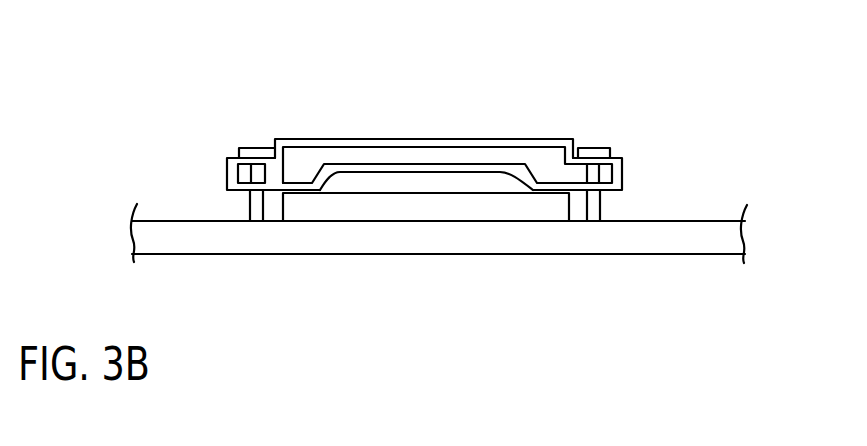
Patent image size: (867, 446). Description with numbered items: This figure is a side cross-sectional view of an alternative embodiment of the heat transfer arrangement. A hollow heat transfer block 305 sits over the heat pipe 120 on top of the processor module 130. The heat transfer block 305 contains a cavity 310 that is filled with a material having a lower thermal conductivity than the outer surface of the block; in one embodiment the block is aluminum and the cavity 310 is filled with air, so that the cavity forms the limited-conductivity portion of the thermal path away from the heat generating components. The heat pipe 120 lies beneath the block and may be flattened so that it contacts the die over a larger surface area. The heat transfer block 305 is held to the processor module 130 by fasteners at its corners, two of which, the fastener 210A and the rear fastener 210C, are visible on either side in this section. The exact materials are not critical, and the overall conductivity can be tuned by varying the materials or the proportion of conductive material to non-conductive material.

The cavity 310 is at (542, 152).
The hollow heat transfer block 305 is at (623, 173).
The heat pipe 120 is at (435, 191).
The fastener 210A is at (250, 207).
The fastener 210C is at (601, 208).
The processor module 130 is at (712, 246).